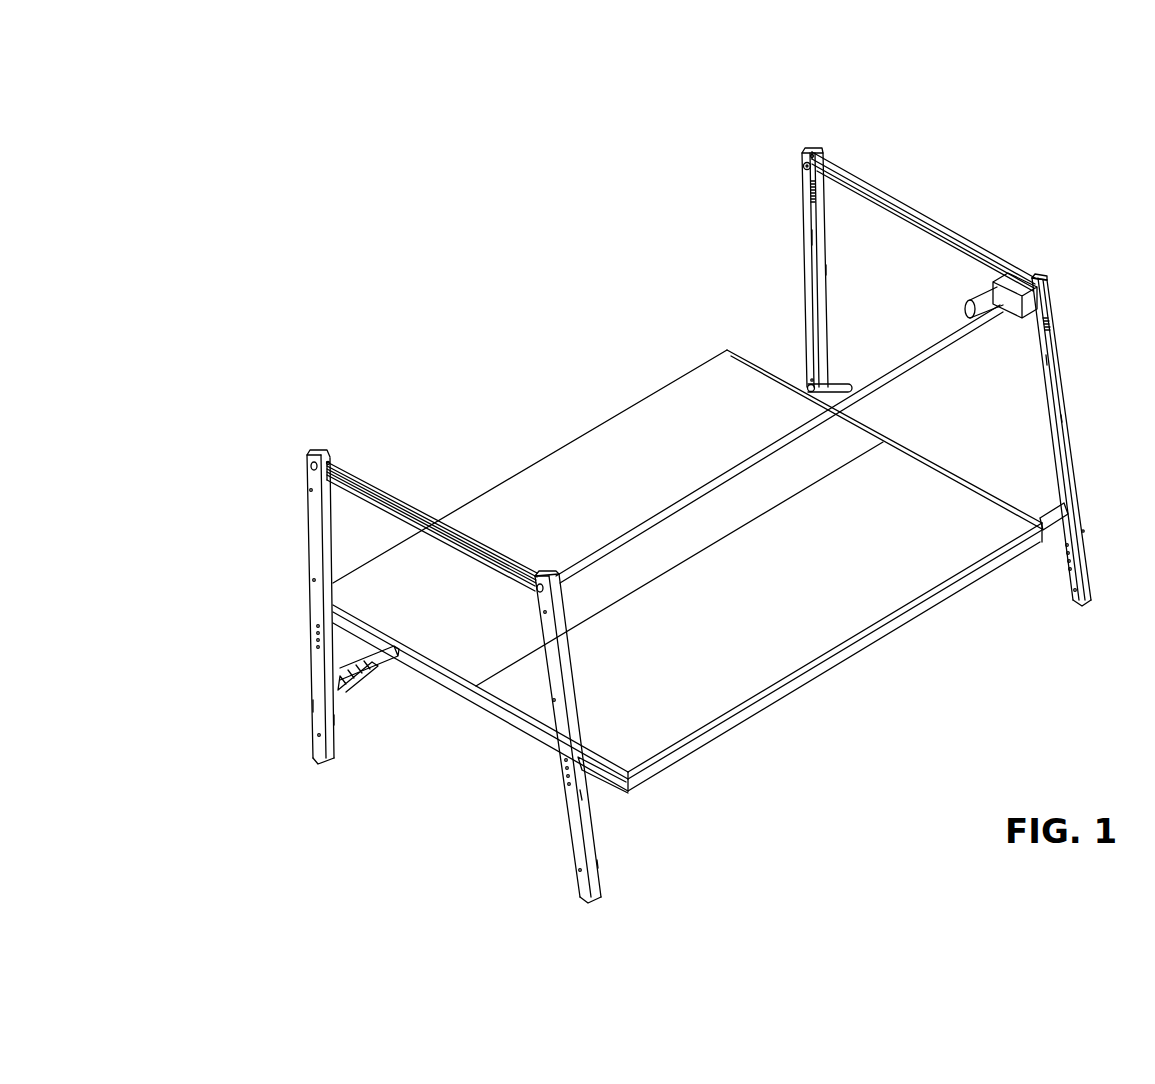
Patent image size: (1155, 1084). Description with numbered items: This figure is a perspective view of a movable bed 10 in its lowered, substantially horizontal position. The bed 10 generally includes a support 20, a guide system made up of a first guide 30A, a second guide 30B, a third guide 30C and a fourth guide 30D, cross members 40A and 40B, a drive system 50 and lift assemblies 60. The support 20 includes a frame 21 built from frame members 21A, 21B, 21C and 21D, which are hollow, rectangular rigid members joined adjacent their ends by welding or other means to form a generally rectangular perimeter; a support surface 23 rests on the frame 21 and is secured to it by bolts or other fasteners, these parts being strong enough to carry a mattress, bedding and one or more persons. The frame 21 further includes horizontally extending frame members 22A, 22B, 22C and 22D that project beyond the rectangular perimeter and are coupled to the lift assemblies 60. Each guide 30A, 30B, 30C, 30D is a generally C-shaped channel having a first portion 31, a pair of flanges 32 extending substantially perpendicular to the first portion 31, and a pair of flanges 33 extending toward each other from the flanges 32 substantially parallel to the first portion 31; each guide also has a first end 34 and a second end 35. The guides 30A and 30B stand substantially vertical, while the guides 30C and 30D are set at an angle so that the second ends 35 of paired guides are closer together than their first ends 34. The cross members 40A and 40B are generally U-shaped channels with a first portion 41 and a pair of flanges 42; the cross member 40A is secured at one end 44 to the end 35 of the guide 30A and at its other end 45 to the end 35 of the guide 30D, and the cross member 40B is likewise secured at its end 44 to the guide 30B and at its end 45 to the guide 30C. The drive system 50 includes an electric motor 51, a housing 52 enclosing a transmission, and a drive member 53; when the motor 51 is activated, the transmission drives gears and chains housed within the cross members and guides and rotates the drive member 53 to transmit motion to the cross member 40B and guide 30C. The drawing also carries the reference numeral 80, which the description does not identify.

The bed 10 is at (506, 310).
The support 20 is at (634, 364).
The frame 21 is at (707, 758).
The frame member 21A is at (857, 647).
The frame member 21B is at (983, 480).
The frame member 21C is at (574, 434).
The frame member 21D is at (472, 688).
The horizontally extending frame member 22A is at (833, 387).
The horizontally extending frame member 22B is at (377, 665).
The horizontally extending frame member 22C is at (603, 787).
The horizontally extending frame member 22D is at (1050, 517).
The support surface 23 is at (697, 623).
The first guide 30A is at (803, 207).
The second guide 30B is at (307, 603).
The third guide 30C is at (567, 847).
The fourth guide 30D is at (1073, 447).
The first portion 31 is at (313, 712).
The flanges 32 is at (335, 723).
The flanges 33 is at (803, 263).
The first end 34 is at (322, 762).
The second end 35 is at (315, 462).
The cross member 40A is at (917, 215).
The cross member 40B is at (363, 482).
The first portion 41 is at (863, 200).
The flanges 42 is at (948, 232).
The end 44 is at (820, 170).
The end 45 is at (540, 572).
The drive system 50 is at (1033, 254).
The electric motor 51 is at (990, 293).
The housing 52 is at (1033, 300).
The drive member 53 is at (695, 493).
The lift assemblies 60 is at (812, 383).
The pivot pin 80 is at (345, 672).